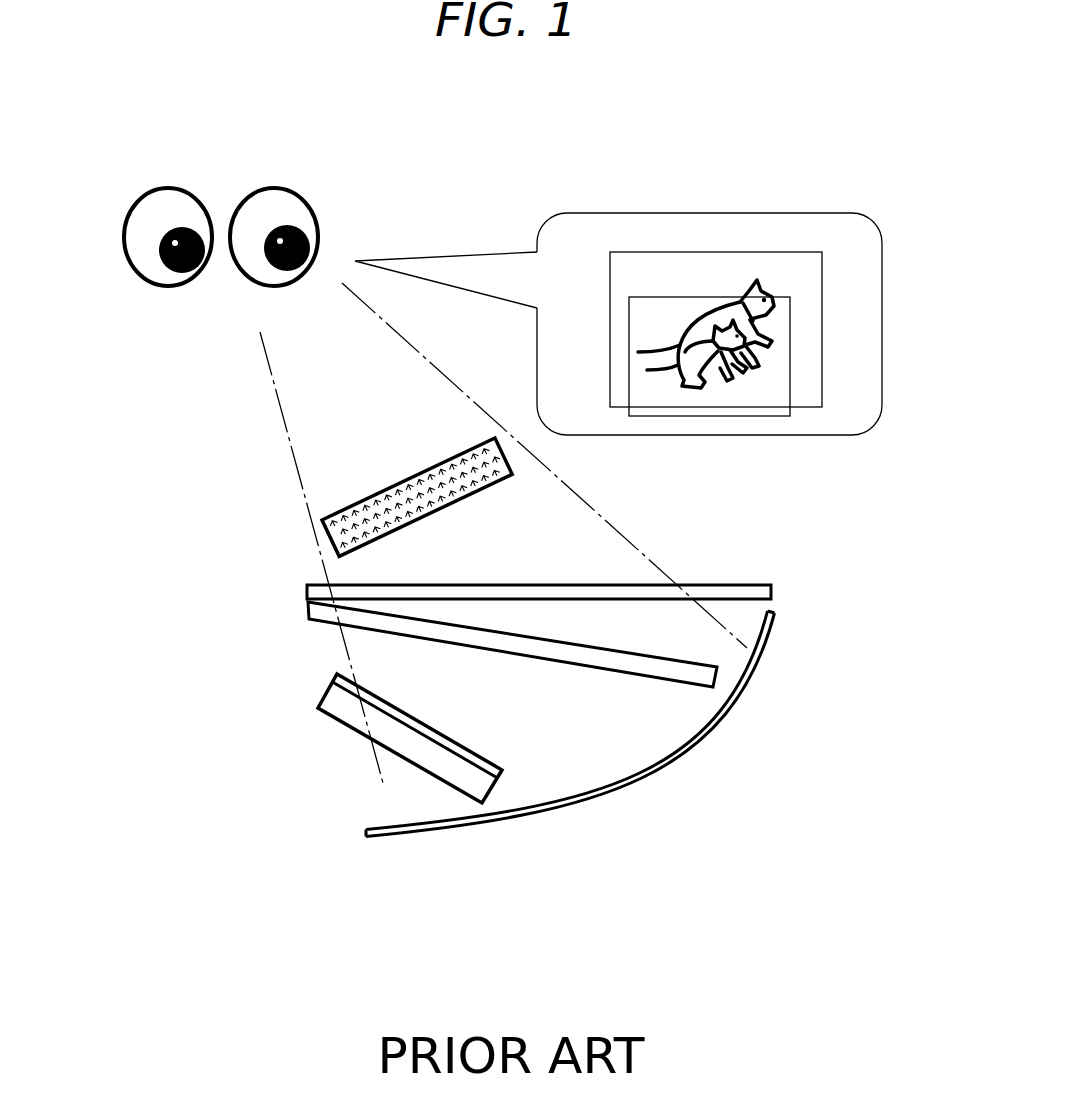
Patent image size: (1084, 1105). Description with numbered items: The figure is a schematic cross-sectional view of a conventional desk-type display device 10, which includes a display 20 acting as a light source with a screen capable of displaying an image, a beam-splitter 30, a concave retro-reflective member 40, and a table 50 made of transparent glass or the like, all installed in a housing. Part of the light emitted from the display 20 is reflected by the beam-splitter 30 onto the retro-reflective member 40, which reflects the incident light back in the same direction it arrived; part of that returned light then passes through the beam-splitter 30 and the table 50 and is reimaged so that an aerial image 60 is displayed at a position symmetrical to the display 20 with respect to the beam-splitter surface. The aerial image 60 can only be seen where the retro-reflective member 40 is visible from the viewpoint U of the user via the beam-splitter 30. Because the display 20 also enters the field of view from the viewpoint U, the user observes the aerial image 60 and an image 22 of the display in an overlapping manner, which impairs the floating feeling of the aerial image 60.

The viewpoint U is at (277, 190).
The display device 10 is at (116, 474).
The display (light source) 20 is at (318, 706).
The image of the display 22 is at (790, 351).
The beam-splitter 30 is at (308, 614).
The retro-reflective member 40 is at (366, 832).
The table 50 is at (748, 585).
The aerial image 60 is at (757, 252).